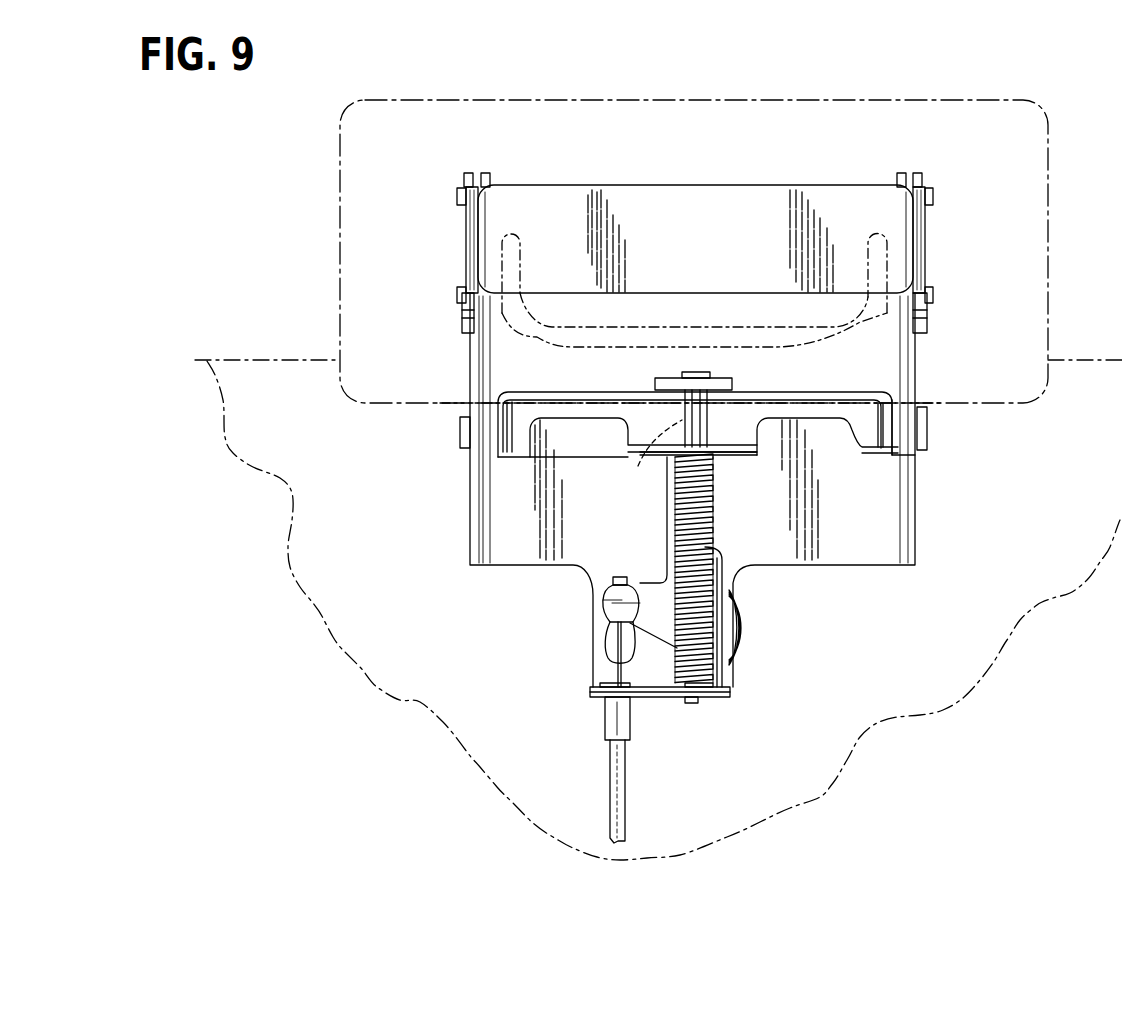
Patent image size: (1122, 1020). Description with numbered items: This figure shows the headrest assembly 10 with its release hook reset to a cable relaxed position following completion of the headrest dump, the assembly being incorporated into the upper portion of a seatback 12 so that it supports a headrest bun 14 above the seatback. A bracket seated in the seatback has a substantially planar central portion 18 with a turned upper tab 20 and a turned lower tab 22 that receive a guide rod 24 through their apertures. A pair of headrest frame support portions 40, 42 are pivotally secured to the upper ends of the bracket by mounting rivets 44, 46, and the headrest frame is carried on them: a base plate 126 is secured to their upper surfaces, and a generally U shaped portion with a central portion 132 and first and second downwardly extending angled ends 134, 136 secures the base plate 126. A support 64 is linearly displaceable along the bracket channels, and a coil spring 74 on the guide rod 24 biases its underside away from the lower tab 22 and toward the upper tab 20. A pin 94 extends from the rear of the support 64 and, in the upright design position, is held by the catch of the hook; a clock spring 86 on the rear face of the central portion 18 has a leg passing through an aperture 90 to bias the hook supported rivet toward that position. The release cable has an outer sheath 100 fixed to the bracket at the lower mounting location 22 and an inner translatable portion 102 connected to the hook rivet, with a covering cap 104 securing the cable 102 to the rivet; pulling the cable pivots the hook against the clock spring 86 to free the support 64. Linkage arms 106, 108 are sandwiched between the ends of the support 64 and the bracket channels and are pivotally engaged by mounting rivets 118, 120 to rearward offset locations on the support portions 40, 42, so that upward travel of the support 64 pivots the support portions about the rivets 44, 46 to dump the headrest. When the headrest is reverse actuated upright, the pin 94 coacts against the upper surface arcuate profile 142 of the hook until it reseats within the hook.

The headrest assembly 10 is at (278, 269).
The seatback 12 is at (282, 368).
The headrest bun 14 is at (352, 208).
The central portion 18 is at (848, 534).
The upper tab 20 is at (618, 345).
The lower tab 22 is at (715, 698).
The guide rod 24 is at (710, 420).
The headrest frame support portion 40 is at (462, 236).
The headrest frame support portion 42 is at (924, 252).
The mounting rivet 44 is at (527, 457).
The mounting rivet 46 is at (873, 442).
The support 64 is at (642, 418).
The coil spring 74 is at (750, 617).
The clock spring 86 is at (755, 648).
The aperture 90 is at (607, 647).
The pin 94 is at (655, 457).
The outer sheath 100 is at (611, 795).
The inner translatable portion 102 is at (610, 673).
The covering cap 104 is at (605, 612).
The linkage arm 106 is at (493, 352).
The linkage arm 108 is at (915, 372).
The mounting rivet 118 is at (508, 178).
The mounting rivet 120 is at (880, 180).
The base plate 126 is at (764, 192).
The central portion 132 is at (680, 330).
The downwardly extending angled end 134 is at (522, 265).
The downwardly extending angled end 136 is at (868, 260).
The upper surface arcuate profile 142 is at (712, 512).